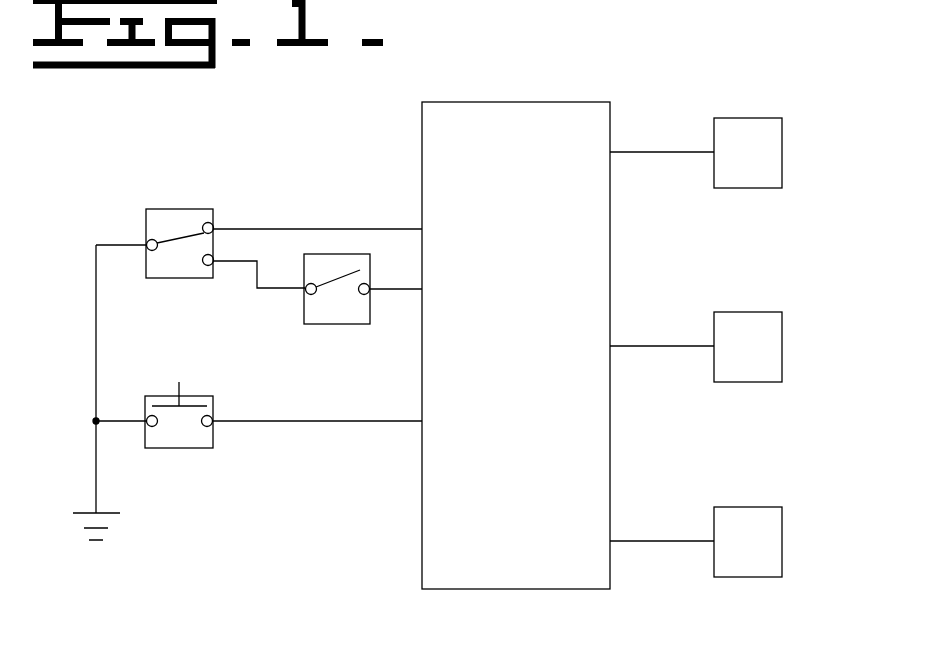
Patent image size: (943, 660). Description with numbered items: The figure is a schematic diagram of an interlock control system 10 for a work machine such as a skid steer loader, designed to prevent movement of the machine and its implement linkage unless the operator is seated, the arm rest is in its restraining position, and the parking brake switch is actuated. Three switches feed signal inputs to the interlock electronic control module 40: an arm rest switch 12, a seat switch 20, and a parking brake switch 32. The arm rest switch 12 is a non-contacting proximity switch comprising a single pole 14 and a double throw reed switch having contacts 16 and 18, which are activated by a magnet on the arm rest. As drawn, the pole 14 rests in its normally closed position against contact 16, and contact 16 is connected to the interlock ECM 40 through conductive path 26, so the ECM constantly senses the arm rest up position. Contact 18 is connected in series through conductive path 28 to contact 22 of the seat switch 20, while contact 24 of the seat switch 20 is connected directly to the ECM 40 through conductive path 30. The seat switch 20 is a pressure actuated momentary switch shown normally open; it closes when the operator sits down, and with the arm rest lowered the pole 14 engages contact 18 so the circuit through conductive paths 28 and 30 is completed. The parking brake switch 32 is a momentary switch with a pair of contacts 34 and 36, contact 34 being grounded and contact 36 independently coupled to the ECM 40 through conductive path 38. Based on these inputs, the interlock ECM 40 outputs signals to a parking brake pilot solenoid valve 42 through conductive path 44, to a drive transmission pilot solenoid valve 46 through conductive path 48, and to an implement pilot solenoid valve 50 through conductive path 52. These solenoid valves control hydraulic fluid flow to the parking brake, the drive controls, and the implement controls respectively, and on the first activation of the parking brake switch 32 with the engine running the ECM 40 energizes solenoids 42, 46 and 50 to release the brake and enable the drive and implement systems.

The interlock control system 10 is at (338, 147).
The arm rest switch 12 is at (122, 223).
The single pole 14 is at (153, 251).
The contact 16 is at (210, 220).
The contact 18 is at (212, 251).
The seat switch 20 is at (352, 252).
The contact 22 is at (311, 295).
The contact 24 is at (368, 276).
The conductive path 26 is at (318, 228).
The conductive path 28 is at (257, 268).
The conductive path 30 is at (397, 292).
The parking brake switch 32 is at (195, 393).
The contact 34 is at (145, 415).
The contact 36 is at (215, 415).
The conductive path 38 is at (337, 422).
The interlock electronic control module 40 is at (573, 573).
The parking brake pilot solenoid valve 42 is at (767, 532).
The conductive path 44 is at (657, 540).
The drive transmission pilot solenoid valve 46 is at (767, 338).
The conductive path 48 is at (657, 345).
The implement pilot solenoid valve 50 is at (767, 145).
The conductive path 52 is at (657, 152).